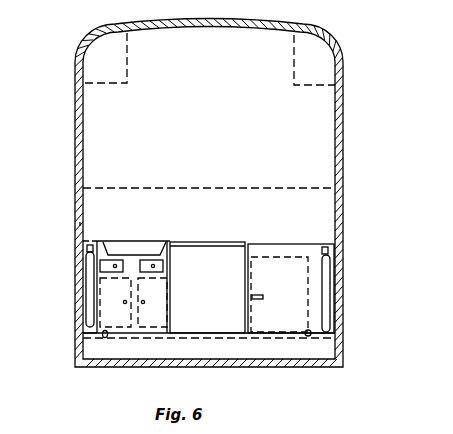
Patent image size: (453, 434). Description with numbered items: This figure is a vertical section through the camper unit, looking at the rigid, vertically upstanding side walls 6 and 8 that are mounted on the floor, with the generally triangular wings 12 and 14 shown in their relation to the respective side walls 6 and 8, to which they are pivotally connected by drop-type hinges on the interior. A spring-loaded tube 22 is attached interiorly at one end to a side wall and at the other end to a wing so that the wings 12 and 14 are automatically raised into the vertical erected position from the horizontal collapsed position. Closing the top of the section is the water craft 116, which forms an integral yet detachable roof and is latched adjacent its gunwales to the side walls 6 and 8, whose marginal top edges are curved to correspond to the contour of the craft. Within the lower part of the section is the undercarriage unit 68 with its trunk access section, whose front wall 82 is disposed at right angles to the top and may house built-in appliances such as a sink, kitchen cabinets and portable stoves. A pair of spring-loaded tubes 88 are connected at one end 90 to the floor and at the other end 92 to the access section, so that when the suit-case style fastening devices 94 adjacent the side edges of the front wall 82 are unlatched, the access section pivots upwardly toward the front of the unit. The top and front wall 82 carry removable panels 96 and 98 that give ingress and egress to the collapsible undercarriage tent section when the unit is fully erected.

The side wall 6 is at (345, 211).
The side wall 8 is at (75, 223).
The wing 12 is at (345, 143).
The wing 14 is at (75, 143).
The spring-loaded tube 22 is at (0, 427).
The undercarriage unit 68 is at (280, 339).
The front wall 82 is at (155, 330).
The spring-loaded tube 88 is at (90, 307).
The end of spring-loaded tube 90 is at (92, 333).
The end of spring-loaded tube 92 is at (88, 248).
The fastening device 94 is at (105, 337).
The removable panel 96 is at (205, 247).
The removable panel 98 is at (188, 323).
The water craft 116 is at (313, 29).